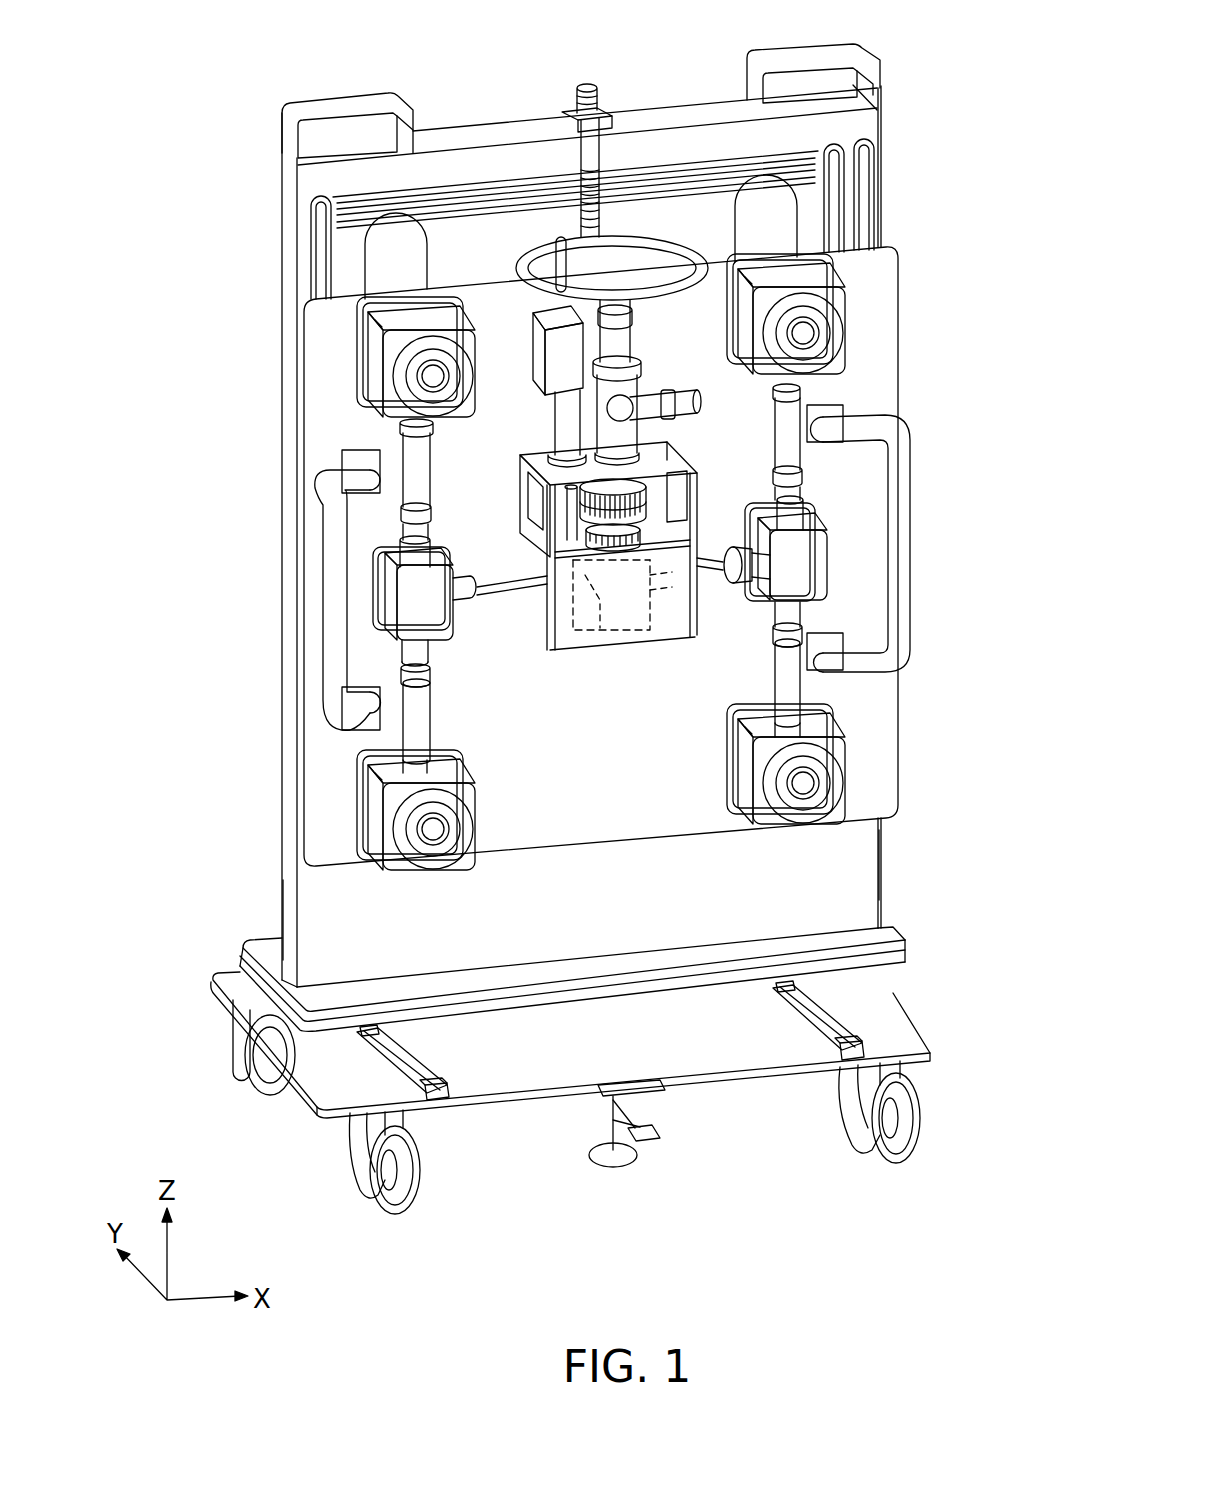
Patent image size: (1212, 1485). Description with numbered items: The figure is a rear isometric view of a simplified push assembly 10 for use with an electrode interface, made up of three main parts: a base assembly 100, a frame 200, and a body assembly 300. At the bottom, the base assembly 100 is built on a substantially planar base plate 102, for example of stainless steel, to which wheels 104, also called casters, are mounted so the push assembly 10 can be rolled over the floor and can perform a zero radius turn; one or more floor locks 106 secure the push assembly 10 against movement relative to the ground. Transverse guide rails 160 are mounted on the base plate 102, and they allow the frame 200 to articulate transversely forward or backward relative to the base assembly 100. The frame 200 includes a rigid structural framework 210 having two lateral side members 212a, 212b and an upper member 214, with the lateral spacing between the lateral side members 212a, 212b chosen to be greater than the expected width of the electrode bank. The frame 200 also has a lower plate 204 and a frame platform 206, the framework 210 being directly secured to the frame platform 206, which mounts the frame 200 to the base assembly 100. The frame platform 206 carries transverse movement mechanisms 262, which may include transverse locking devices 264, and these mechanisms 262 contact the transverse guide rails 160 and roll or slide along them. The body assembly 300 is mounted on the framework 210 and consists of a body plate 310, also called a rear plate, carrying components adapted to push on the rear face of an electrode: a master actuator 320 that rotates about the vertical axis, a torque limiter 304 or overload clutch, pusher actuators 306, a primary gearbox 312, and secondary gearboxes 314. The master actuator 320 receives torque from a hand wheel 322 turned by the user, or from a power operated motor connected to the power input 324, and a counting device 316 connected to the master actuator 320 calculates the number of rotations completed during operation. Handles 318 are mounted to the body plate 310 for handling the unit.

The push assembly 10 is at (245, 62).
The base assembly 100 is at (218, 1030).
The base plate 102 is at (236, 975).
The wheels 104 is at (388, 1200).
The floor locks 106 is at (620, 1165).
The transverse guide rails 160 is at (432, 1092).
The frame 200 is at (257, 190).
The lower plate 204 is at (860, 893).
The frame platform 206 is at (890, 940).
The structural framework 210 is at (860, 122).
The lateral side member 212a is at (288, 910).
The lateral side member 212b is at (880, 845).
The upper member 214 is at (483, 133).
The transverse movement mechanisms 262 is at (605, 1056).
The transverse locking devices 264 is at (360, 1040).
The body assembly 300 is at (920, 392).
The torque limiter 304 is at (650, 520).
The pusher actuators 306 is at (353, 330).
The body plate 310 is at (883, 700).
The primary gearbox 312 is at (612, 600).
The secondary gearboxes 314 is at (425, 607).
The counting device 316 is at (553, 365).
The handles 318 is at (333, 688).
The master actuator 320 is at (617, 350).
The hand wheel 322 is at (650, 233).
The power input 324 is at (690, 410).